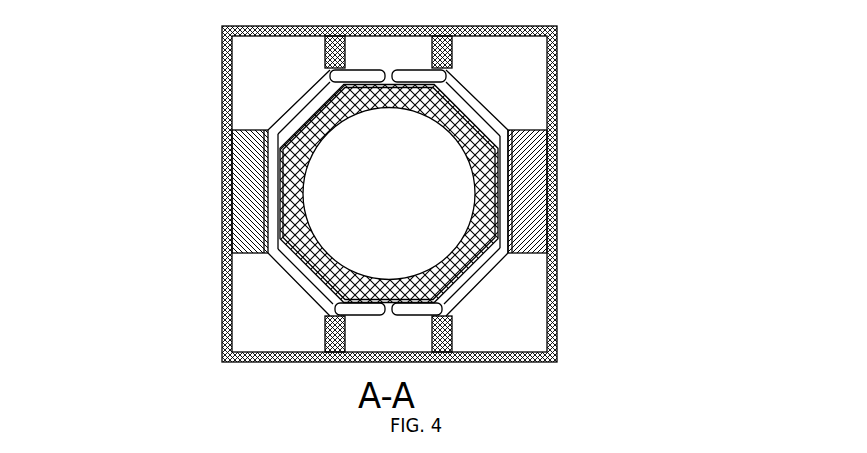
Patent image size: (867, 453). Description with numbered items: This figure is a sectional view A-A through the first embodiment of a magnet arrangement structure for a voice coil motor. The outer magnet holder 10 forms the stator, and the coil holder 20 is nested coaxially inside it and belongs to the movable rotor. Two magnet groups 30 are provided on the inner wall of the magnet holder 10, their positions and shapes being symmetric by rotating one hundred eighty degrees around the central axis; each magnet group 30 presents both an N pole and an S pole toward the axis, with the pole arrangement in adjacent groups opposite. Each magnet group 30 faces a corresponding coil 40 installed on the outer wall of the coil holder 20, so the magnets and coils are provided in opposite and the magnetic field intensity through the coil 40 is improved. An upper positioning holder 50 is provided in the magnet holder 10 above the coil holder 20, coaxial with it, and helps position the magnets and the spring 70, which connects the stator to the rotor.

The magnet holder 10 is at (216, 123).
The coil holder 20 is at (337, 108).
The magnet group 30 is at (236, 214).
The coil 40 is at (272, 227).
The upper positioning holder 50 is at (533, 243).
The spring 70 is at (450, 300).